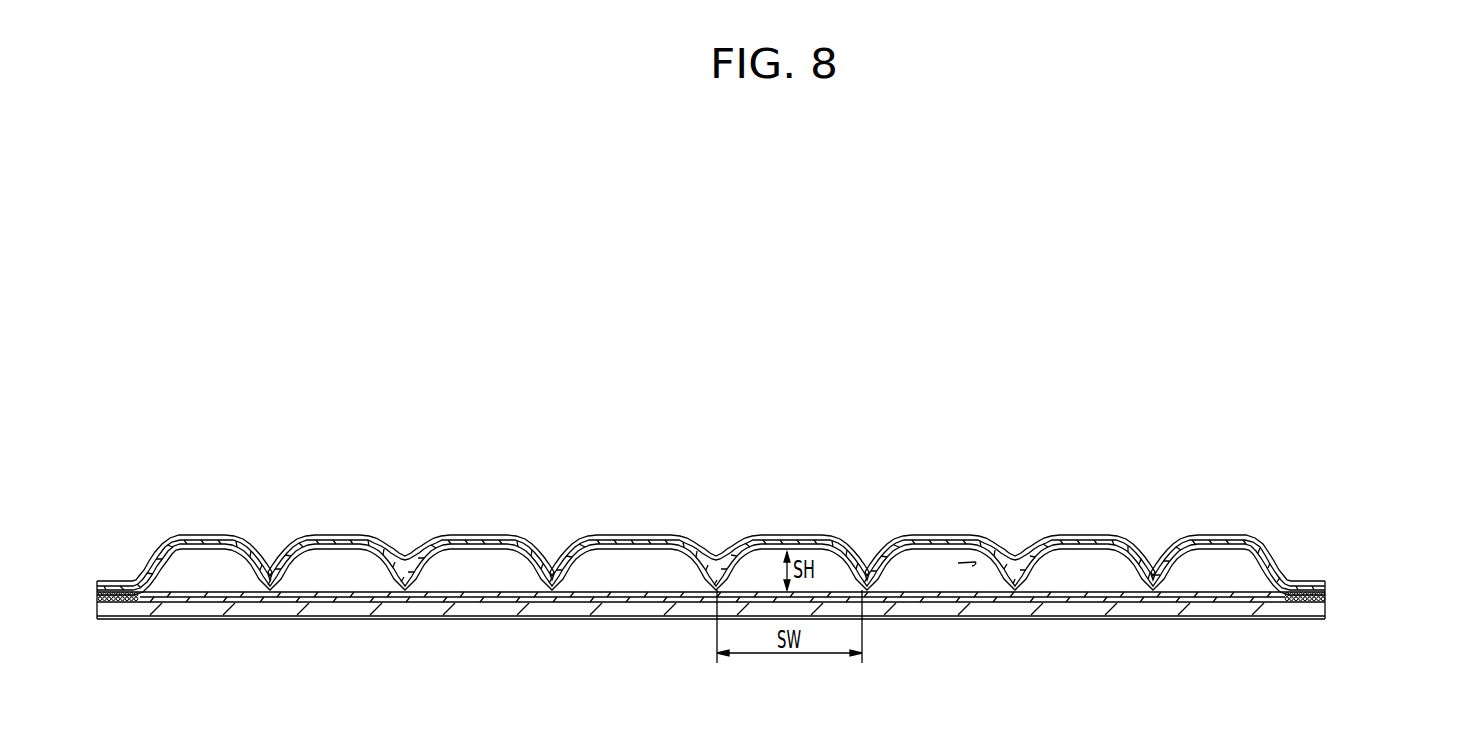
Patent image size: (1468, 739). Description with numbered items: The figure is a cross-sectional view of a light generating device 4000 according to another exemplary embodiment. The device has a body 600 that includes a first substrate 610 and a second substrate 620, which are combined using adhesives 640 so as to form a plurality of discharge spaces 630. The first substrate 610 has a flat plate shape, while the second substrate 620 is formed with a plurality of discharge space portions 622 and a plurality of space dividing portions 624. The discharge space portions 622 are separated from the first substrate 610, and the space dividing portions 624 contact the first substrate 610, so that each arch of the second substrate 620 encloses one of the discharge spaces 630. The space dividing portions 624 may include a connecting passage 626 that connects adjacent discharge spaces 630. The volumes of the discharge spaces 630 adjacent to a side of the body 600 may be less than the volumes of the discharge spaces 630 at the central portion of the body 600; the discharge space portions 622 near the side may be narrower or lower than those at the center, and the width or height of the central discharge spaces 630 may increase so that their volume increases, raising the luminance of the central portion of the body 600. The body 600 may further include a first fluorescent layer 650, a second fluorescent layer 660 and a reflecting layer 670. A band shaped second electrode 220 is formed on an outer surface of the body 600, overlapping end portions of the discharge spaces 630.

The light generating device 4000 is at (758, 338).
The body 600 is at (1392, 557).
The first substrate 610 is at (1328, 612).
The second substrate 620 is at (1328, 584).
The discharge space portions 622 is at (1222, 548).
The space dividing portions 624 is at (1159, 553).
The connecting passage 626 is at (1014, 554).
The discharge spaces 630 is at (962, 565).
The adhesives 640 is at (1328, 597).
The first fluorescent layer 650 is at (1128, 599).
The second fluorescent layer 660 is at (1068, 550).
The reflecting layer 670 is at (1217, 604).
The second electrode 220 is at (1305, 581).